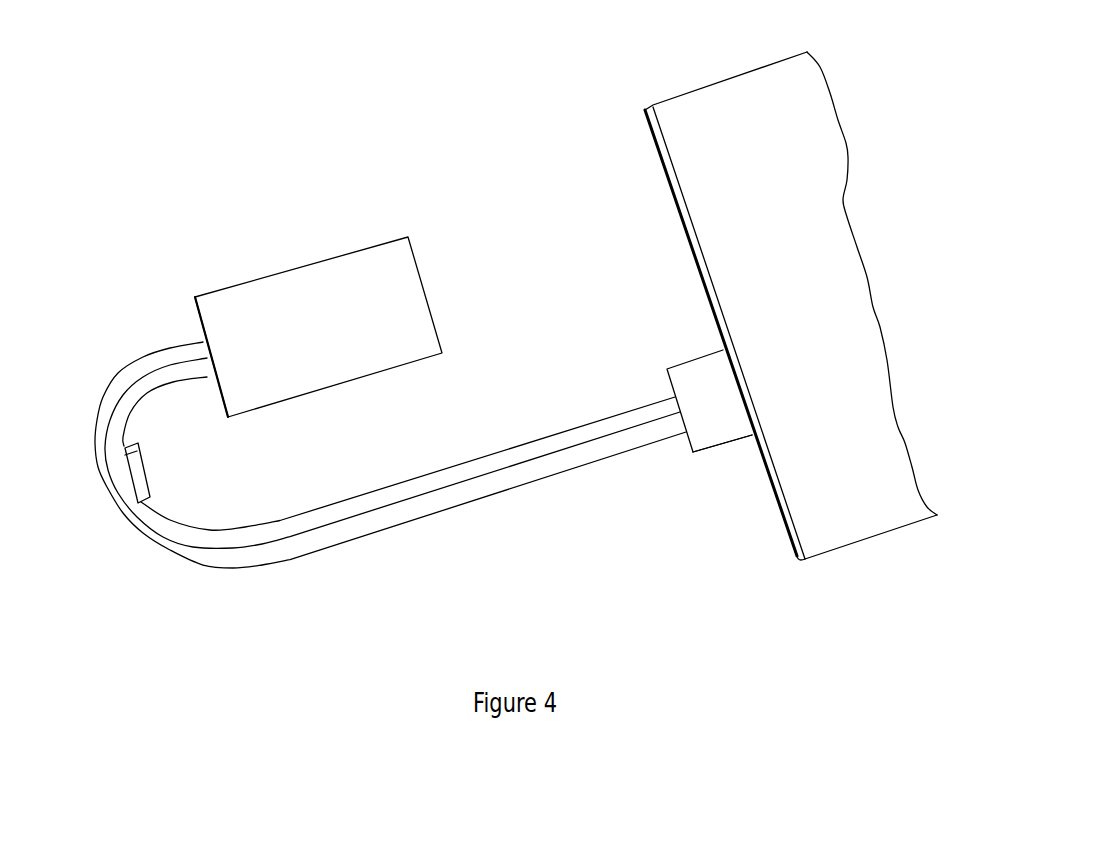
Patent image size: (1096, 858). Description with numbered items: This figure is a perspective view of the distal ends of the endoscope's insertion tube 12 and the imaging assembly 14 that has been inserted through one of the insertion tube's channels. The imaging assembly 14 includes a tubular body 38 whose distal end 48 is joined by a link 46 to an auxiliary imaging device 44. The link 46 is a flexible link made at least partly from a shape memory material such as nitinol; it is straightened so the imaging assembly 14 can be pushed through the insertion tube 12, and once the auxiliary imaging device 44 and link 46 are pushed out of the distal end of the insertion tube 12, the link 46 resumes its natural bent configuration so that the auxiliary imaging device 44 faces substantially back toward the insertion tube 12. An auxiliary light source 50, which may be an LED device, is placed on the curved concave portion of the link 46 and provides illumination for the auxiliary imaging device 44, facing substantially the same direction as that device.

The insertion tube 12 is at (722, 102).
The imaging assembly 14 is at (483, 131).
The tubular body 38 is at (702, 383).
The auxiliary imaging device 44 is at (274, 277).
The link 46 is at (491, 477).
The distal end of the tubular body 48 is at (693, 453).
The auxiliary light source 50 is at (135, 478).